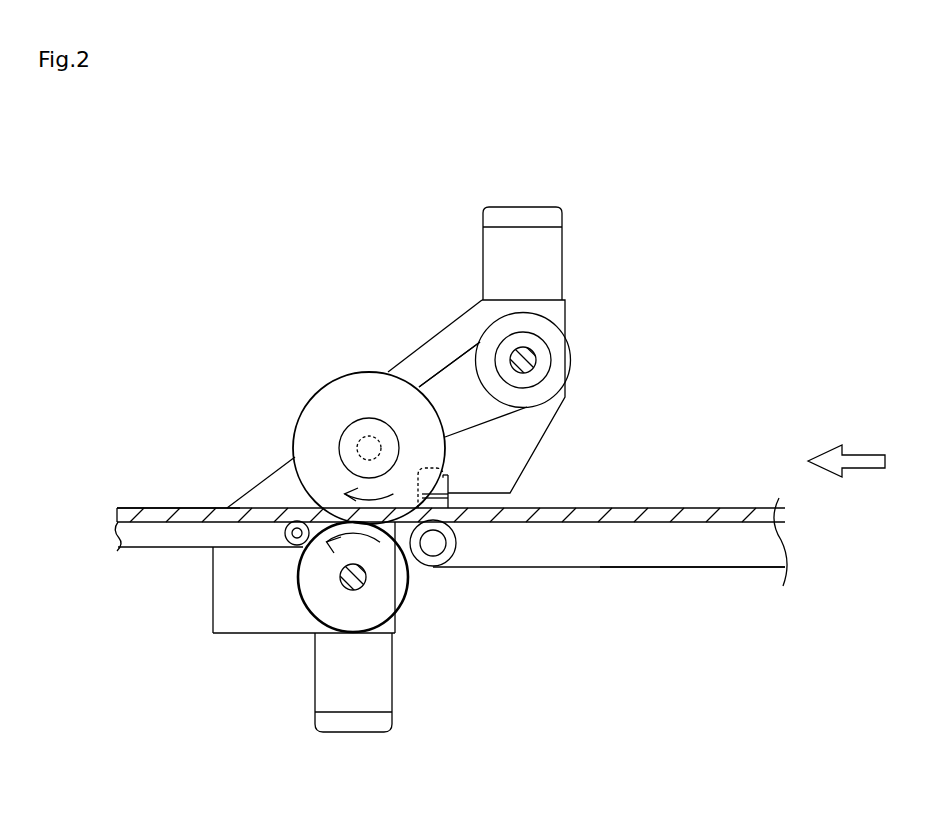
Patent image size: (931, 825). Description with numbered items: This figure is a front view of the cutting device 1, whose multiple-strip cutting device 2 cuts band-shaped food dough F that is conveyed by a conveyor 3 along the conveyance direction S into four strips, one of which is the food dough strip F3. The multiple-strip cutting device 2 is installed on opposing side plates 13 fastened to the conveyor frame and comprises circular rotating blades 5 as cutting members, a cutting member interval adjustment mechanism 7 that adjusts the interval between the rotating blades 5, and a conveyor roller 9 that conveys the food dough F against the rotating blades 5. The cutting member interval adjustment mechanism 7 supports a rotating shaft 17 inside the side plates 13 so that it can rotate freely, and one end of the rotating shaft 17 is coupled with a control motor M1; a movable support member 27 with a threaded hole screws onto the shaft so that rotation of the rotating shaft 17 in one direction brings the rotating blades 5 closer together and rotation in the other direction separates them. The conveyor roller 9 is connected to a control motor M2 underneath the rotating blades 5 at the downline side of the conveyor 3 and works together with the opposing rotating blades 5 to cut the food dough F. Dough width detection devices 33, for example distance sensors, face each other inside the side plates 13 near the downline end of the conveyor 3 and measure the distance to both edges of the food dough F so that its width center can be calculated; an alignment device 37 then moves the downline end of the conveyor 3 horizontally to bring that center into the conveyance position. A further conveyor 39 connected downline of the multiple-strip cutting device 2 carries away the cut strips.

The cutting device 1 is at (207, 237).
The multiple-strip cutting device 2 is at (218, 332).
The conveyor 3 is at (652, 547).
The rotating blade 5 is at (330, 397).
The cutting member interval adjustment mechanism 7 is at (595, 270).
The conveyor roller 9 is at (403, 603).
The side plate 13 is at (461, 326).
The rotating shaft 17 is at (525, 358).
The movable support member 27 is at (448, 388).
The dough width detection device 33 is at (448, 520).
The alignment device 37 is at (741, 590).
The conveyor 39 is at (188, 538).
The control motor M1 is at (540, 217).
The control motor M2 is at (338, 675).
The food dough F is at (690, 508).
The food dough strip F3 is at (145, 517).
The conveyance direction S is at (872, 425).